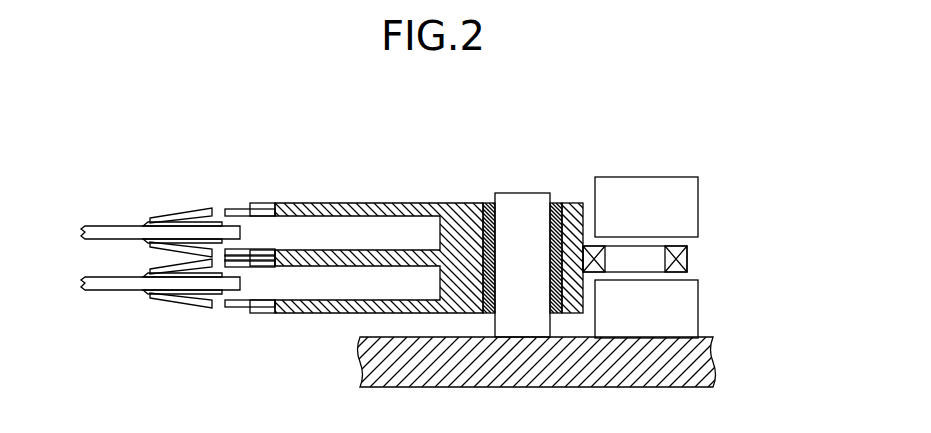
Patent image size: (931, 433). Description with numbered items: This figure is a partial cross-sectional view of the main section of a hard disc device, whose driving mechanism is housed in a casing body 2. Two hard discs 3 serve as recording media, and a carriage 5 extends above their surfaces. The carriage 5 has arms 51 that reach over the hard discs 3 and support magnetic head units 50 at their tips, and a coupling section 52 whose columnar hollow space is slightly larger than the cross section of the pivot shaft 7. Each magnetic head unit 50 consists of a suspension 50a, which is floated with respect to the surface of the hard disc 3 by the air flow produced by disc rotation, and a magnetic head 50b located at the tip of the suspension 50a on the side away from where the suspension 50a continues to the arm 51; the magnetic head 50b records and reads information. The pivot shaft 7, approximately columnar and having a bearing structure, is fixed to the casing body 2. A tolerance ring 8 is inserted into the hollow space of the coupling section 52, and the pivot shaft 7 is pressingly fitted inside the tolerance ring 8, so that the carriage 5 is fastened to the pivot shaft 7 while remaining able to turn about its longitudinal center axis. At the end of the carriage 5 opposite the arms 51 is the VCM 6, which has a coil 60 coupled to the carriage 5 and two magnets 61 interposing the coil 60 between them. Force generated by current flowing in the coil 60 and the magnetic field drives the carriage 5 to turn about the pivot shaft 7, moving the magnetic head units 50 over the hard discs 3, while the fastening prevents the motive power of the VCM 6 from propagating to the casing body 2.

The casing body 2 is at (630, 388).
The hard disc 3 is at (100, 227).
The carriage 5 is at (414, 250).
The VCM 6 is at (688, 257).
The pivot shaft 7 is at (520, 202).
The tolerance ring 8 is at (488, 203).
The magnetic head unit 50 is at (190, 261).
The suspension 50a is at (212, 261).
The magnetic head 50b is at (141, 224).
The arm 51 is at (347, 252).
The coupling section 52 is at (550, 203).
The coil 60 is at (687, 258).
The magnet 61 is at (698, 208).